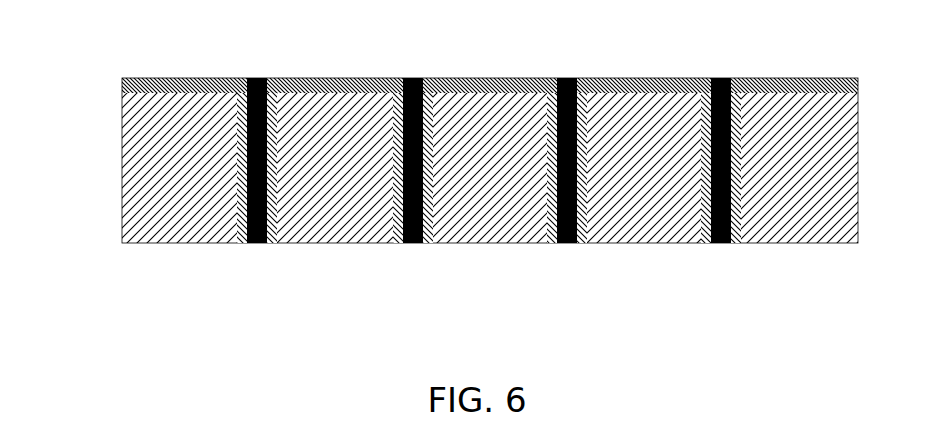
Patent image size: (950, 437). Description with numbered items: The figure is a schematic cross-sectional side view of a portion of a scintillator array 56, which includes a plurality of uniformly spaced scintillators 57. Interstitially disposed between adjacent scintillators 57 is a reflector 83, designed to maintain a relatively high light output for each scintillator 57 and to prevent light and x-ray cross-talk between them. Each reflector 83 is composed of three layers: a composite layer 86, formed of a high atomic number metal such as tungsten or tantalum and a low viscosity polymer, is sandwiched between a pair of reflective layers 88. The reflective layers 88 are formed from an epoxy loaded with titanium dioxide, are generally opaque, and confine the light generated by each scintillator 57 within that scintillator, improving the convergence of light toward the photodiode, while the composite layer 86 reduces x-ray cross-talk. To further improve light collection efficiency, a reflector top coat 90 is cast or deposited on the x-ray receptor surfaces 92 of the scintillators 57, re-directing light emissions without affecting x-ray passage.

The scintillator array 56 is at (76, 147).
The scintillator 57 is at (166, 229).
The reflector 83 is at (230, 266).
The composite layer 86 is at (257, 243).
The reflective layer 88 is at (243, 105).
The reflector top coat 90 is at (172, 88).
The x-ray receptor surface 92 is at (154, 92).